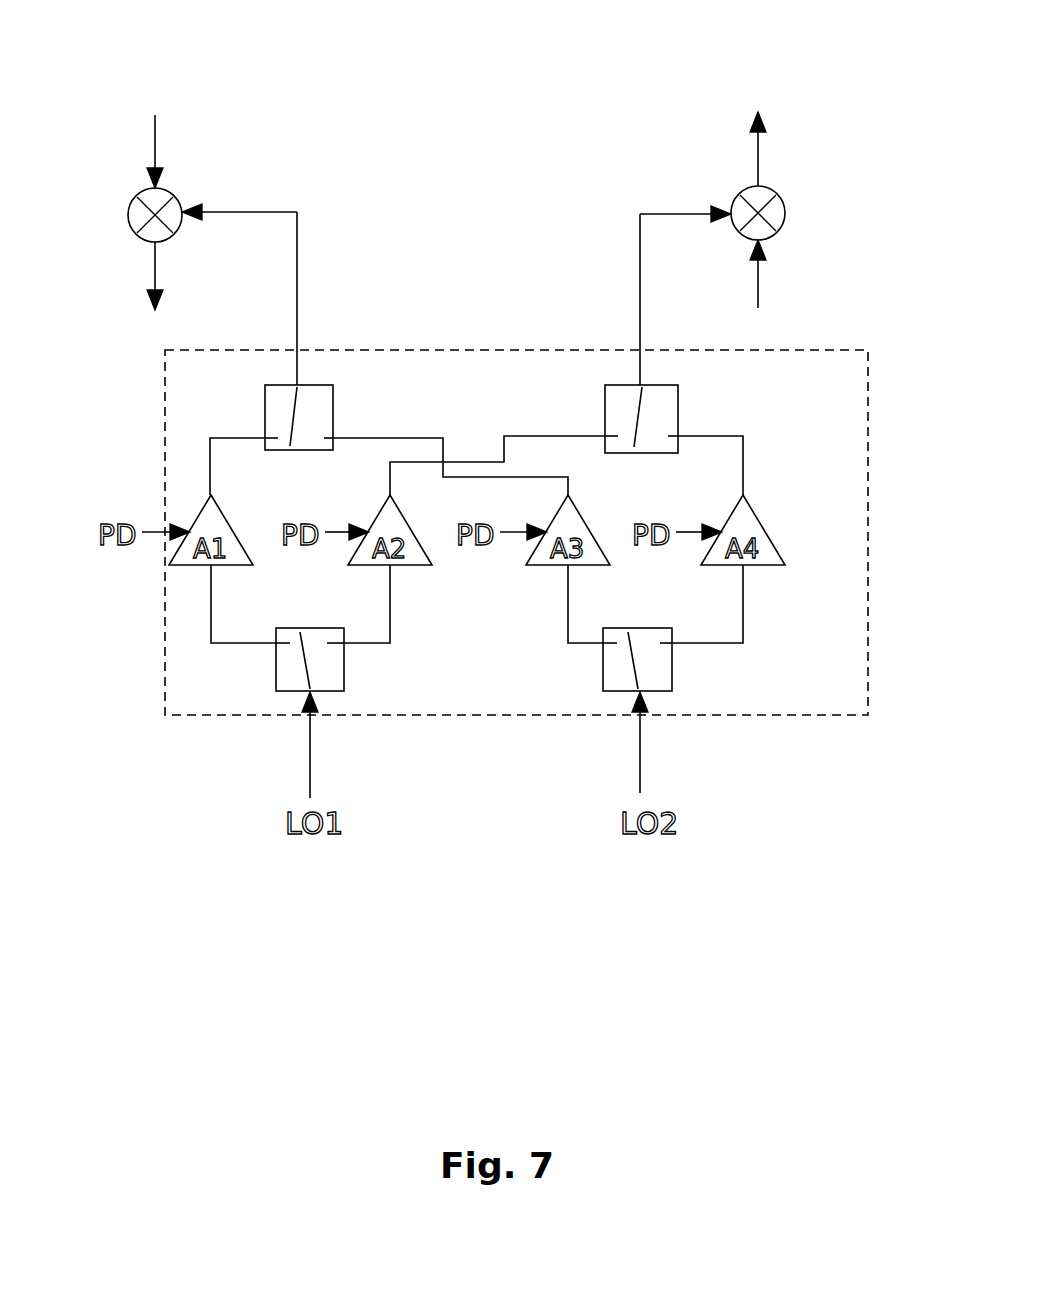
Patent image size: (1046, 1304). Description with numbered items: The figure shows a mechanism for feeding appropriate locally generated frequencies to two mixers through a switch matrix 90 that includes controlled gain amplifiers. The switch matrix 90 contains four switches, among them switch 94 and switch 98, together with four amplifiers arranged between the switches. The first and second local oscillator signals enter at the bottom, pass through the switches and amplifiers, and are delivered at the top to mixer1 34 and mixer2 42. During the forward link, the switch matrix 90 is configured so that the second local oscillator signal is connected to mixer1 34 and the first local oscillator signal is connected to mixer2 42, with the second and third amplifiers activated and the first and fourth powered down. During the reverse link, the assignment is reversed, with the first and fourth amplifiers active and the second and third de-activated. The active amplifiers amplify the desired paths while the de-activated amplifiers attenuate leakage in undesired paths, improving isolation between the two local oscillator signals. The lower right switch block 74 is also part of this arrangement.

The mixer1 34 is at (122, 188).
The mixer2 42 is at (780, 180).
The switch matrix 90 is at (350, 400).
The switch 98 is at (594, 375).
The switch 94 is at (266, 690).
The second input switch 74 is at (680, 692).